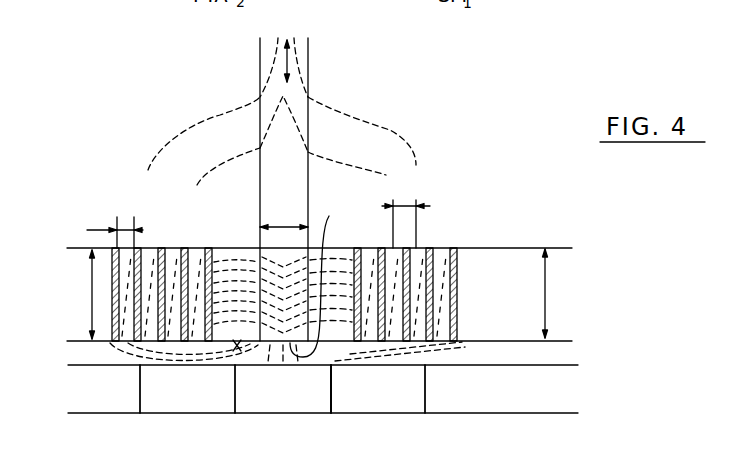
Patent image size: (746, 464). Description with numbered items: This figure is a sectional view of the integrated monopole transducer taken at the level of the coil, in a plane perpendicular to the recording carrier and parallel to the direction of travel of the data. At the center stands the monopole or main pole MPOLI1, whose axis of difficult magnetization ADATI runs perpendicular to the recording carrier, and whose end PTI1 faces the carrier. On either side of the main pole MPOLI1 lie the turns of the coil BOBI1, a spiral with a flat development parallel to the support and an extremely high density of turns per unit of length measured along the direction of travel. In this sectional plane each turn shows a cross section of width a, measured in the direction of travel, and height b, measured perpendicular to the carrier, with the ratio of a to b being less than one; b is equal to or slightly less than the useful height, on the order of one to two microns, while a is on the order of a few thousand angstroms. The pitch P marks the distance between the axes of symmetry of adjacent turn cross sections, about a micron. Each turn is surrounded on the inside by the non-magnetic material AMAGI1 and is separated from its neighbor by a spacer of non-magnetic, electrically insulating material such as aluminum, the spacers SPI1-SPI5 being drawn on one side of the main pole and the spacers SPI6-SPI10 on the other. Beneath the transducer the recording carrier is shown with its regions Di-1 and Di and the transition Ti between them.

The spacers SPI1-SPI5 is at (208, 248).
The spacers SPI6-SPI10 is at (363, 248).
The non-magnetic material AMAGI1 is at (236, 248).
The axis of difficult magnetization ADATI is at (287, 53).
The main pole MPOLI1 is at (309, 84).
The end of the monopole PTI1 is at (322, 275).
The coil BOBI1 is at (445, 237).
The width of the turn cross section a is at (115, 229).
The height of the turn cross section b is at (319, 294).
The thickness ei of pole piece ei is at (284, 215).
The pitch between the runs of the coil P is at (406, 215).
The track/domain Di-1 is at (182, 402).
The track/domain Di is at (283, 402).
The transition Ti is at (331, 413).